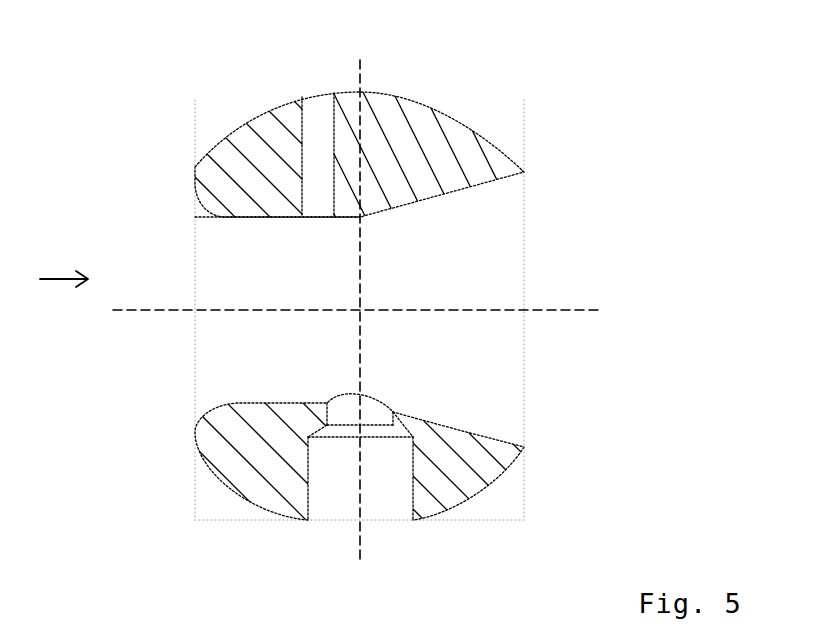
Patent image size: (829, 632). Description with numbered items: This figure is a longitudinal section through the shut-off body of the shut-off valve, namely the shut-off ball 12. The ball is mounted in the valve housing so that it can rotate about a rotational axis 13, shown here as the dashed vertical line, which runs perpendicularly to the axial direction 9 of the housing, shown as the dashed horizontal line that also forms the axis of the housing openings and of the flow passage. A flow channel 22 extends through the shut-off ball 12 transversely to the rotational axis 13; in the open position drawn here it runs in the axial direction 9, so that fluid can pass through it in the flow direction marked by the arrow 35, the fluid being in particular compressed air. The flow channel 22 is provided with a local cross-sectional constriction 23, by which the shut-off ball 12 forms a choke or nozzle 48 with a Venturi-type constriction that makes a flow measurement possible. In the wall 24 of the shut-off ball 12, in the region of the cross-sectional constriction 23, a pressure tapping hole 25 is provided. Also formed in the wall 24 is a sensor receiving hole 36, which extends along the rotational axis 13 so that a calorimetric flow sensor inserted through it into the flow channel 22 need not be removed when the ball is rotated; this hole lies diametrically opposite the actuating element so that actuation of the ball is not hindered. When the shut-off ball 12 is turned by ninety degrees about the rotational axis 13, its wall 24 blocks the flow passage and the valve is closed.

The shut-off ball 12 is at (160, 64).
The rotational axis 13 is at (362, 75).
The axial direction 9 is at (563, 310).
The cross-sectional constriction 23 is at (260, 216).
The pressure tapping hole 25 is at (318, 103).
The arrow 35 is at (58, 278).
The flow channel 22 is at (300, 358).
The choke or nozzle 48 is at (196, 403).
The sensor receiving hole 36 is at (324, 508).
The wall 24 is at (476, 482).